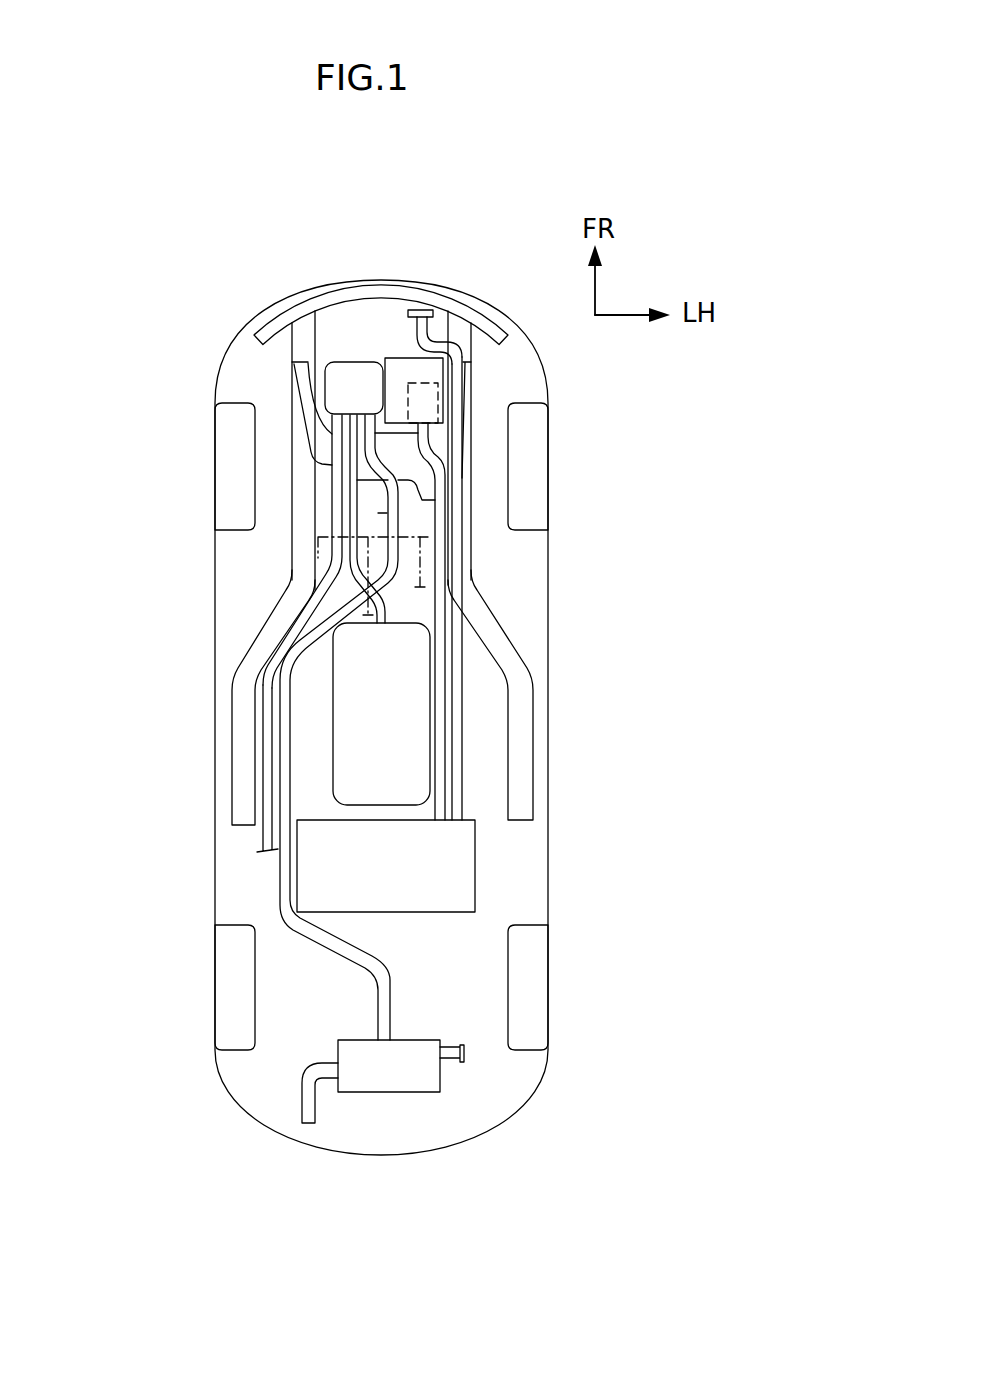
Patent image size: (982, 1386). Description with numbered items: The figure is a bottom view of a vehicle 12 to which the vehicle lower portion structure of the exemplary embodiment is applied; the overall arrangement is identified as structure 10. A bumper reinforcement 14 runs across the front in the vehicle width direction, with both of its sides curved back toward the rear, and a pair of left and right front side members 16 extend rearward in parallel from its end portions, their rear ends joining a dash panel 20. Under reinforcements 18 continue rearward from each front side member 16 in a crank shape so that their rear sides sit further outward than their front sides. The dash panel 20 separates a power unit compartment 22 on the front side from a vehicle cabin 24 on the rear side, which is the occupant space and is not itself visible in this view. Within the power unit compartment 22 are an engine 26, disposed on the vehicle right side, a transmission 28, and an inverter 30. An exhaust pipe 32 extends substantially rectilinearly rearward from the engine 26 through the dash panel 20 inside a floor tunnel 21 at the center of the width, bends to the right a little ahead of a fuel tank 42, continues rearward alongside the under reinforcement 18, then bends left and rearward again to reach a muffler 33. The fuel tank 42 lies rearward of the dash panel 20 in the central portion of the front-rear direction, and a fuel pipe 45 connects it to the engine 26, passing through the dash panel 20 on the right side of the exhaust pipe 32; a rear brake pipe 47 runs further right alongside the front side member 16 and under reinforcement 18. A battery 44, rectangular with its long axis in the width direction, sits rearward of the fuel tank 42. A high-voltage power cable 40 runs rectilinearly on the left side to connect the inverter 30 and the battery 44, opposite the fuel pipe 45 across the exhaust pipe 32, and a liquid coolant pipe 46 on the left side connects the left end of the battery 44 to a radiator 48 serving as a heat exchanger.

The fuel cell vehicle 10 is at (147, 372).
The vehicle 12 is at (152, 510).
The bumper reinforcement 14 is at (360, 298).
The front side member 16 is at (291, 343).
The under reinforcement 18 is at (256, 650).
The dash panel 20 is at (318, 545).
The floor tunnel 21 is at (420, 560).
The power unit compartment 22 is at (377, 333).
The vehicle cabin 24 is at (280, 753).
The engine 26 is at (350, 362).
The transmission 28 is at (393, 357).
The inverter 30 is at (437, 412).
The exhaust pipe 32 is at (383, 513).
The muffler 33 is at (390, 1092).
The high-voltage power cable 40 is at (445, 757).
The fuel tank 42 is at (430, 780).
The battery 44 is at (475, 873).
The fuel pipe 45 is at (332, 450).
The liquid coolant pipe 46 is at (463, 697).
The rear brake pipe 47 is at (263, 840).
The radiator 48 is at (432, 313).